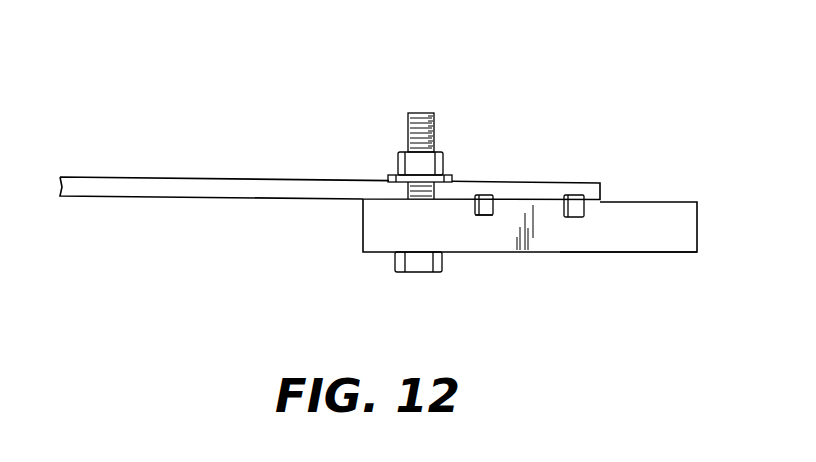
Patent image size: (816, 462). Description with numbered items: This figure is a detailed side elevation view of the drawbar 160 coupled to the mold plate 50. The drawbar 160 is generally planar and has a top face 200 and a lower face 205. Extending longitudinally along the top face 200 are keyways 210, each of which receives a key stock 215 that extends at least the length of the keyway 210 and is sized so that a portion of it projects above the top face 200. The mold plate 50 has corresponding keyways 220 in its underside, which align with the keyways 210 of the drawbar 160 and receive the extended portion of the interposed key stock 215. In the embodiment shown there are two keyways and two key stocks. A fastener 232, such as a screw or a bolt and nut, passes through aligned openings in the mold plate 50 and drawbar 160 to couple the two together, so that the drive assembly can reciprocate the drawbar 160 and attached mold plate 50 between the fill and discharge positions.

The drawbar 160 is at (717, 140).
The mold plate 50 is at (538, 183).
The fastener 232 is at (408, 130).
The top face 200 is at (649, 202).
The lower face 205 is at (648, 255).
The keyway 220 is at (481, 193).
The keyway 210 is at (482, 221).
The key stock 215 is at (575, 205).